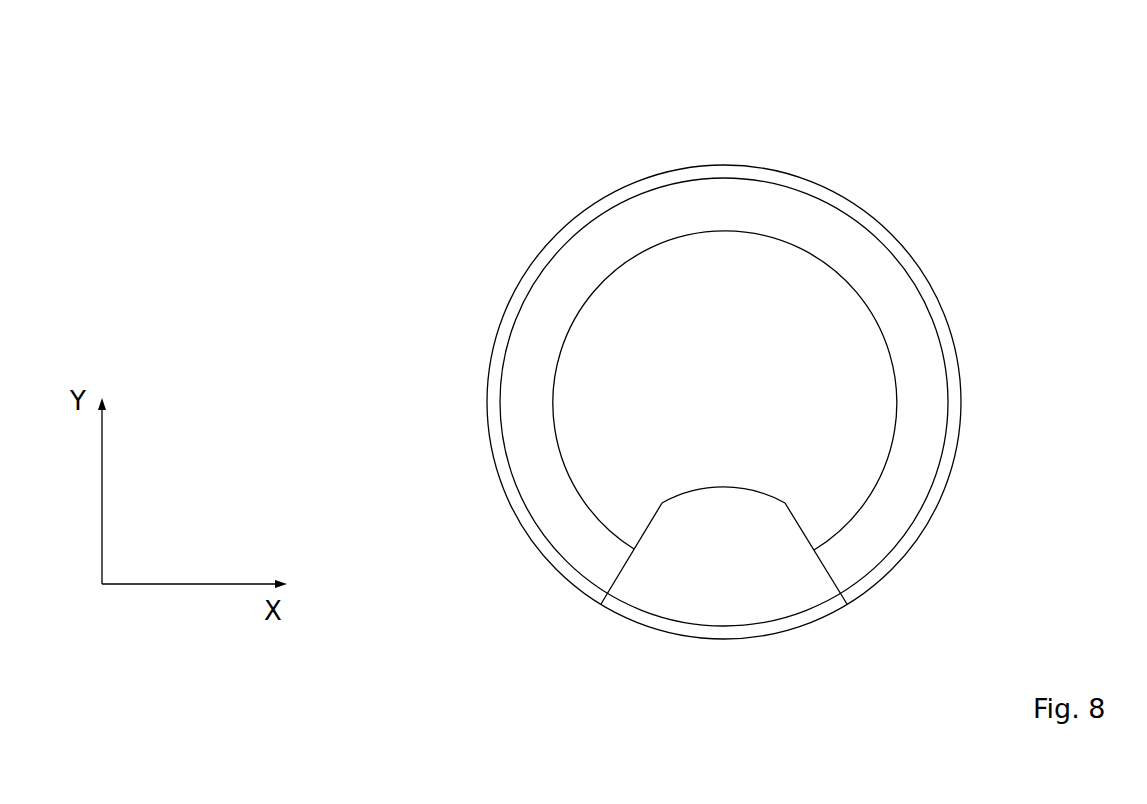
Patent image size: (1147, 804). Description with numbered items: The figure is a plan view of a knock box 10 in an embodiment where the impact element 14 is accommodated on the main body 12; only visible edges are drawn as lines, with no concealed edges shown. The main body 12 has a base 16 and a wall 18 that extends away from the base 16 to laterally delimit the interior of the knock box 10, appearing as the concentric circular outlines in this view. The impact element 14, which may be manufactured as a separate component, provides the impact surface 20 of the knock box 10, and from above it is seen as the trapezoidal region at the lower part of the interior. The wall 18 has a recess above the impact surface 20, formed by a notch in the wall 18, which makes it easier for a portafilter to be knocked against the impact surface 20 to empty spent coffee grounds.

The knock box 10 is at (561, 158).
The main body 12 is at (508, 256).
The impact element 14 is at (691, 468).
The base 16 is at (828, 358).
The wall 18 is at (822, 218).
The impact surface 20 is at (760, 582).